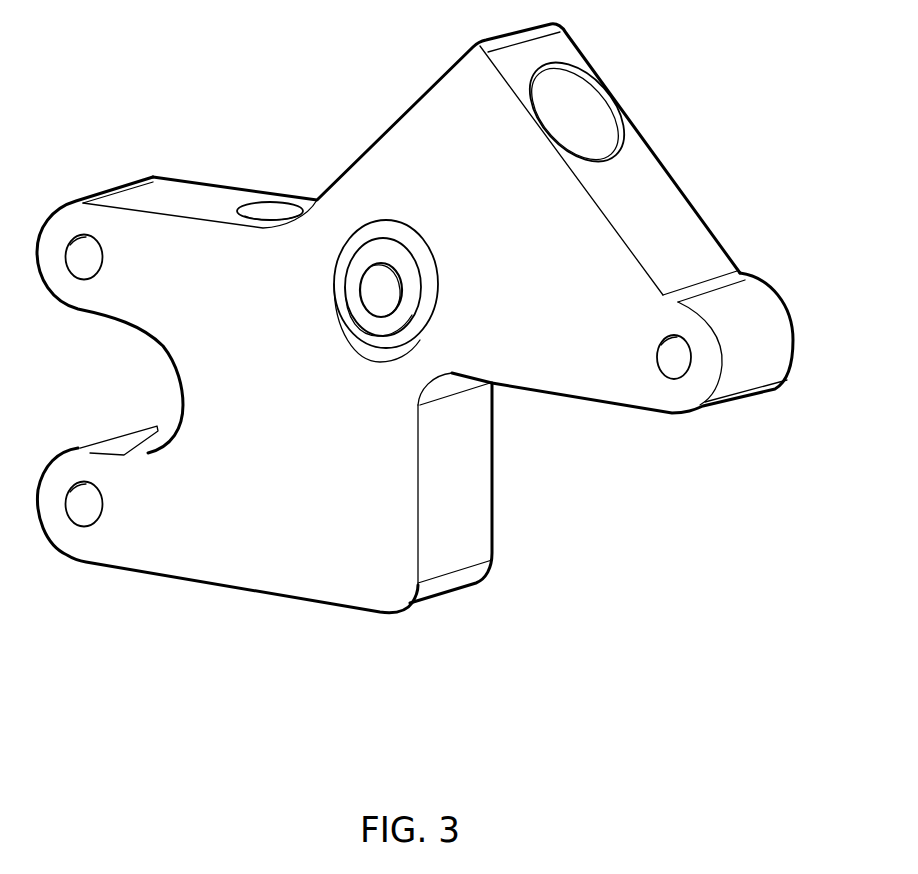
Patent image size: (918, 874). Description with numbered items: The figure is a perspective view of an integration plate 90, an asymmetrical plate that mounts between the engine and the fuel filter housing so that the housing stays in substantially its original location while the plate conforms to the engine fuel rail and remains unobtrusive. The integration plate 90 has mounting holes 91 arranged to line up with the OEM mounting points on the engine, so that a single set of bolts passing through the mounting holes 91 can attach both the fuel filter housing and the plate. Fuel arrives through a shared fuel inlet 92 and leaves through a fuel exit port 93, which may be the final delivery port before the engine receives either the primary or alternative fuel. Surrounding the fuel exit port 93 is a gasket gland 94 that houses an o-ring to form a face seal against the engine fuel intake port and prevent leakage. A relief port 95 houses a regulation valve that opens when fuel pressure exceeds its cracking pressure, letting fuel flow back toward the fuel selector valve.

The integration plate 90 is at (253, 536).
The mounting holes 91 is at (83, 262).
The shared fuel inlet 92 is at (573, 115).
The fuel exit port 93 is at (389, 290).
The gasket gland 94 is at (385, 232).
The relief port 95 is at (270, 212).